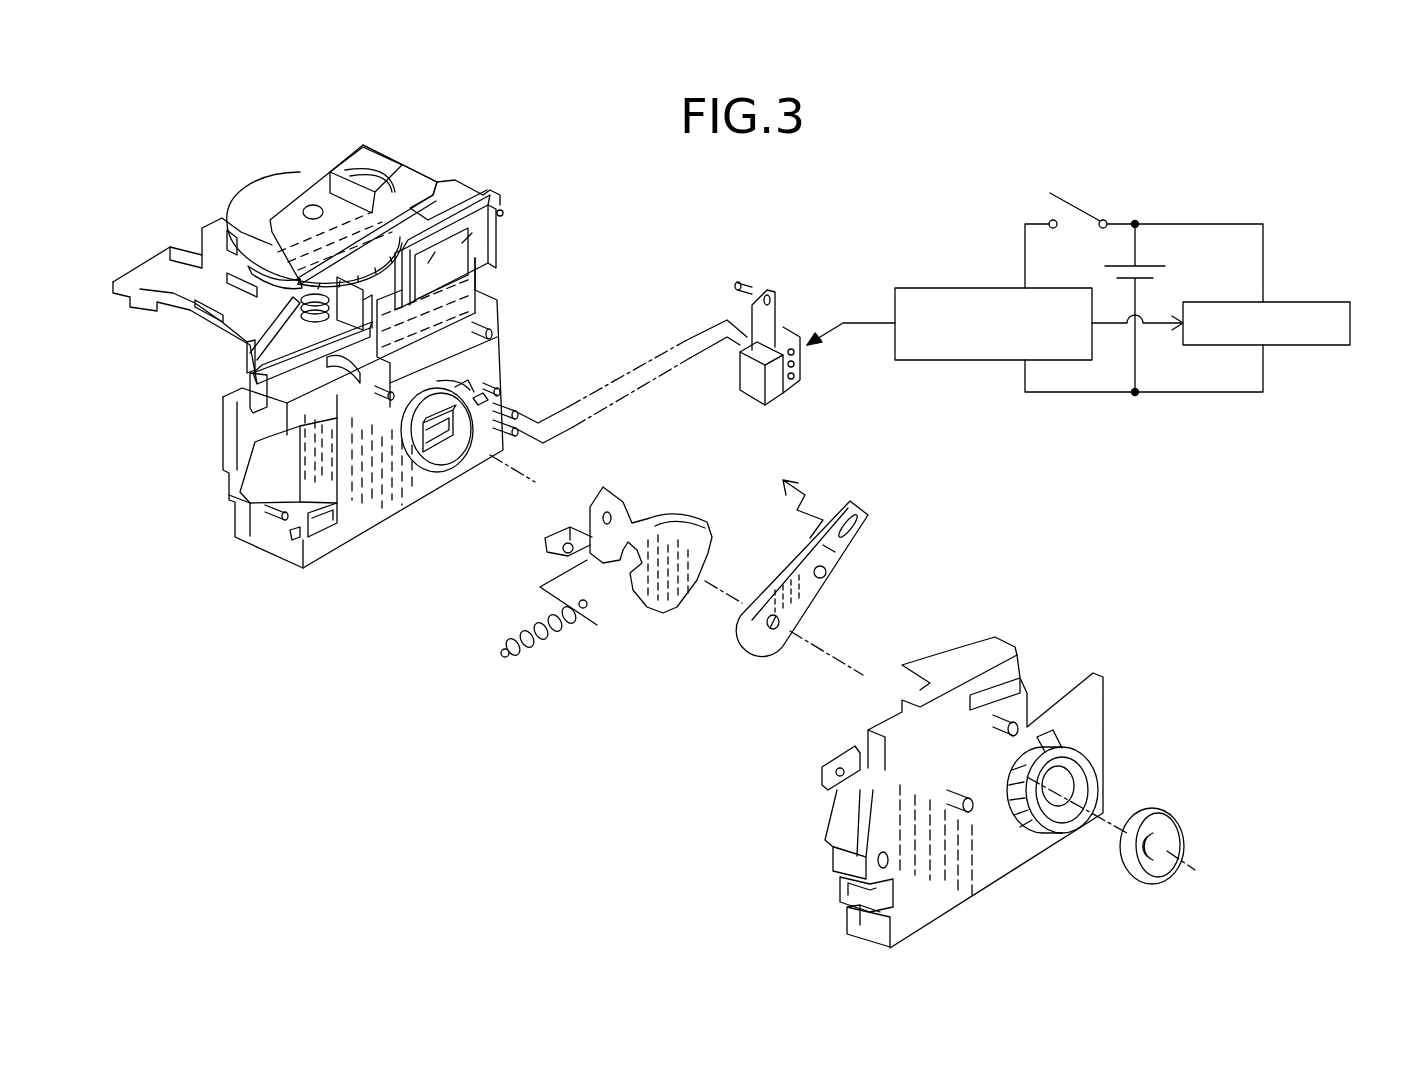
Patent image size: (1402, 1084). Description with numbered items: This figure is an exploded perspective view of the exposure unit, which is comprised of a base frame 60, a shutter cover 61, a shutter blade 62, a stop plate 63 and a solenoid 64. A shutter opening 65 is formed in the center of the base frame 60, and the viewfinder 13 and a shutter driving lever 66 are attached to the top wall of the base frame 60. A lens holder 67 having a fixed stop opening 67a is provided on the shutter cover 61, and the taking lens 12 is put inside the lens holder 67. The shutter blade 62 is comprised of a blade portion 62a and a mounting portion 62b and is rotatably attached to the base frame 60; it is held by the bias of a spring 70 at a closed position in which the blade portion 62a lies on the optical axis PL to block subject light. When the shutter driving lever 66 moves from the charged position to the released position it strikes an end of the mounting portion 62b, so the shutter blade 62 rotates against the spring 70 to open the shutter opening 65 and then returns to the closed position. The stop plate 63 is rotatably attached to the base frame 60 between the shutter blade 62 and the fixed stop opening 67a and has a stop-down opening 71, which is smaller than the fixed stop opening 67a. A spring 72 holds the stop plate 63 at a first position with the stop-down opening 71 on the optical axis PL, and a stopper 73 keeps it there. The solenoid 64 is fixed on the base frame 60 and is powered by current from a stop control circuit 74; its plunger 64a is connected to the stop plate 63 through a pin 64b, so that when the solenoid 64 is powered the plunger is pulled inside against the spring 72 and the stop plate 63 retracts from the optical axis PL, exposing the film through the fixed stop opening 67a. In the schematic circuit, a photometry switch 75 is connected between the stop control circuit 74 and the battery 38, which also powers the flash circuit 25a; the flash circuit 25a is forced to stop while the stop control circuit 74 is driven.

The taking lens 12 is at (1183, 828).
The viewfinder 13 is at (488, 252).
The flash circuit 25a is at (1295, 302).
The battery 38 is at (1155, 266).
The base frame 60 is at (372, 508).
The shutter cover 61 is at (985, 867).
The shutter blade 62 is at (640, 567).
The blade portion 62a is at (657, 603).
The mounting portion 62b is at (617, 503).
The stop plate 63 is at (809, 580).
The solenoid 64 is at (780, 390).
The plunger 64a is at (778, 310).
The pin 64b is at (748, 282).
The shutter opening 65 is at (436, 452).
The shutter driving lever 66 is at (288, 432).
The lens holder 67 is at (1065, 825).
The fixed stop opening 67a is at (1080, 758).
The spring 70 is at (512, 655).
The stop-down opening 71 is at (773, 630).
The spring 72 is at (812, 500).
The stopper 73 is at (502, 390).
The stop control circuit 74 is at (953, 288).
The photometry switch 75 is at (1090, 213).
The optical axis PL is at (863, 678).